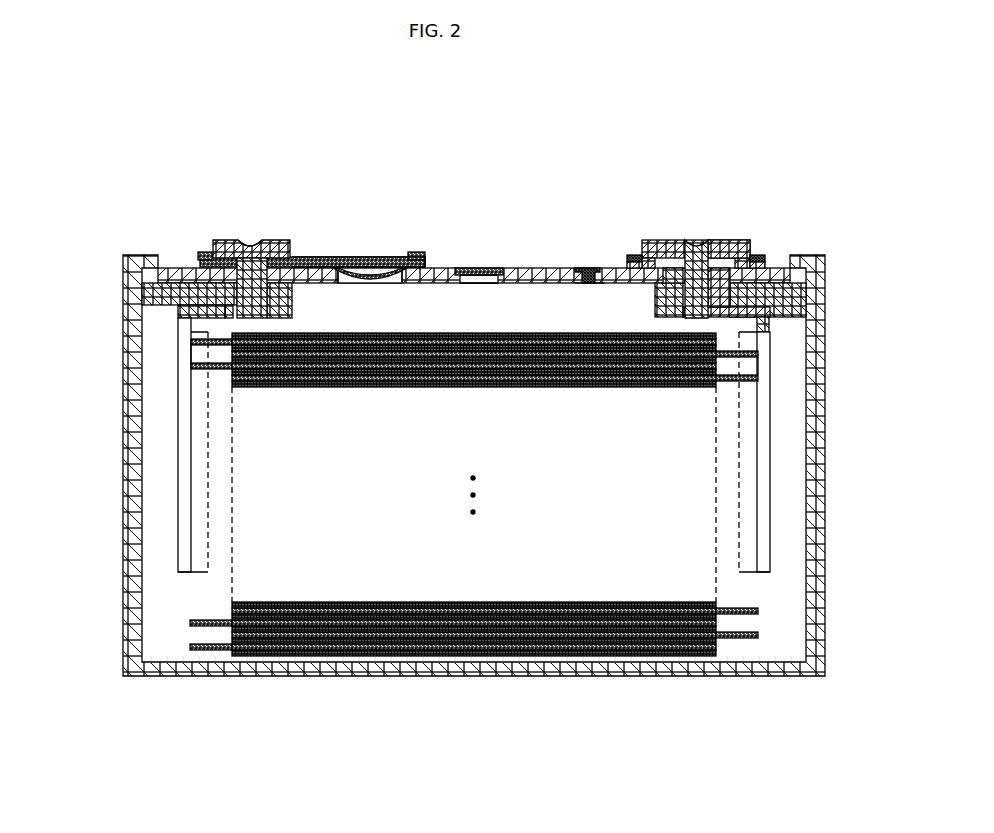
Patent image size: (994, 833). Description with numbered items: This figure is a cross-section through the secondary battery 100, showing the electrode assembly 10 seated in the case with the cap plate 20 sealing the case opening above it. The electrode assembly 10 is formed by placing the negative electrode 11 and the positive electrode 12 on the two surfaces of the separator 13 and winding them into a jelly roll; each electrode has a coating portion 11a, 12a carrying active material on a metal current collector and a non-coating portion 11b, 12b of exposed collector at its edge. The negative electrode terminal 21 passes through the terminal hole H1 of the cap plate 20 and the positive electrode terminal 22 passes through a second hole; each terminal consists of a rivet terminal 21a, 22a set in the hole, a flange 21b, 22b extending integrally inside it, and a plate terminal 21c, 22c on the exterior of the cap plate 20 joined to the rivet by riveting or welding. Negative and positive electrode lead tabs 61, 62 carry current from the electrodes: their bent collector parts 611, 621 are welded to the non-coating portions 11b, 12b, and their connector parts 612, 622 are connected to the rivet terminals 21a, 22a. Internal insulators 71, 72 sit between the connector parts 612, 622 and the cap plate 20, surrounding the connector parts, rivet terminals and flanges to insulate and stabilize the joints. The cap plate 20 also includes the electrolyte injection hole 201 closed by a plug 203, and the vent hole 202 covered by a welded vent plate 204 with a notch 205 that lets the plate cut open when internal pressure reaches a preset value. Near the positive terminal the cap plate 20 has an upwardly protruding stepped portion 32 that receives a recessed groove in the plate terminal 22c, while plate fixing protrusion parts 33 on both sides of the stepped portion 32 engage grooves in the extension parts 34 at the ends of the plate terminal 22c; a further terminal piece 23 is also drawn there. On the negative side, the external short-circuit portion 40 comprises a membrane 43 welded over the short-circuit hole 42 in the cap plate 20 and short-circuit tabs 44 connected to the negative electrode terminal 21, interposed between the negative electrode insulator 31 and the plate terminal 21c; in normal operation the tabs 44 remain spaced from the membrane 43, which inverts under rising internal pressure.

The secondary battery 100 is at (62, 160).
The electrode assembly 10 is at (529, 658).
The negative electrode 11 is at (453, 558).
The coating portion 11a is at (474, 534).
The non-coating portion 11b is at (205, 650).
The positive electrode 12 is at (495, 564).
The coating portion 12a is at (474, 540).
The non-coating portion 12b is at (735, 645).
The separator 13 is at (474, 555).
The cap plate 20 is at (548, 268).
The electrolyte injection hole 201 is at (590, 283).
The vent hole 202 is at (478, 283).
The plug 203 is at (588, 268).
The vent plate 204 is at (488, 268).
The notch 205 is at (478, 268).
The negative electrode terminal 21 is at (253, 240).
The rivet terminal 21a is at (252, 318).
The flange 21b is at (291, 257).
The plate terminal 21c is at (250, 233).
The positive electrode terminal 22 is at (704, 240).
The rivet terminal 22a is at (693, 317).
The flange 22b is at (667, 317).
The plate terminal 22c is at (720, 240).
The terminal plate 23 is at (752, 258).
The negative electrode insulator 31 is at (417, 252).
The stepped portion 32 is at (670, 268).
The plate fixing protrusion part 33 is at (633, 255).
The extension part 34 is at (650, 262).
The external short-circuit portion 40 is at (382, 258).
The short-circuit hole 42 is at (384, 283).
The membrane 43 is at (348, 283).
The short-circuit tab 44 is at (208, 255).
The negative electrode lead tab 61 is at (121, 438).
The collector part 611 is at (178, 397).
The connector part 612 is at (180, 308).
The positive electrode lead tab 62 is at (848, 444).
The collector part 621 is at (770, 397).
The connector part 622 is at (770, 320).
The internal insulator 71 is at (160, 293).
The internal insulator 72 is at (806, 293).
The terminal hole H1 is at (243, 247).